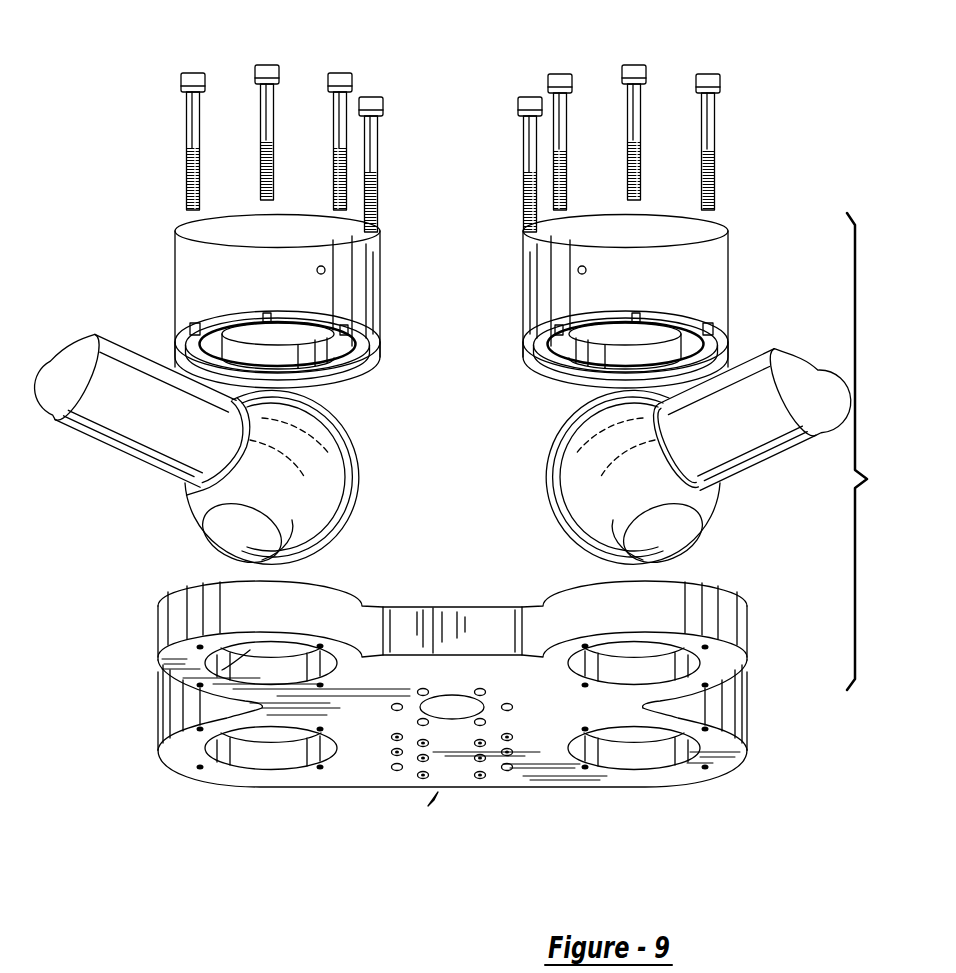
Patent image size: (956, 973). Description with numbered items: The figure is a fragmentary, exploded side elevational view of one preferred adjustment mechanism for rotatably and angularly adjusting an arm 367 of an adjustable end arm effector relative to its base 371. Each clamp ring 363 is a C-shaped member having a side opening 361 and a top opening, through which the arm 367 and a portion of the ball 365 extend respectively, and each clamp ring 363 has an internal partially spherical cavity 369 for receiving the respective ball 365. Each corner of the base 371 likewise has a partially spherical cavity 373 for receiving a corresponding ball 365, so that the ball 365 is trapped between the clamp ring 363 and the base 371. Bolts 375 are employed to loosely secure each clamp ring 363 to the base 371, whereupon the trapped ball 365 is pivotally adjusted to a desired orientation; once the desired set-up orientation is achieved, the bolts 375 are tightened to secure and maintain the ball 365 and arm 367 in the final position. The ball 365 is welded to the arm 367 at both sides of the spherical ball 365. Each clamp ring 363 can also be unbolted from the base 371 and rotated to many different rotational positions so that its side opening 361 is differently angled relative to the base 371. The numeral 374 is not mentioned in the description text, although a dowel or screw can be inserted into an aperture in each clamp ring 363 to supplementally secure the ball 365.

The side opening 361 is at (183, 342).
The clamp ring 363 is at (517, 300).
The ball 365 is at (187, 503).
The arm 367 is at (125, 448).
The internal partially spherical cavity 369 is at (305, 352).
The base 371 is at (370, 776).
The partially spherical cavity 373 is at (165, 677).
The housing hole 374 is at (577, 270).
The bolts 375 is at (340, 70).